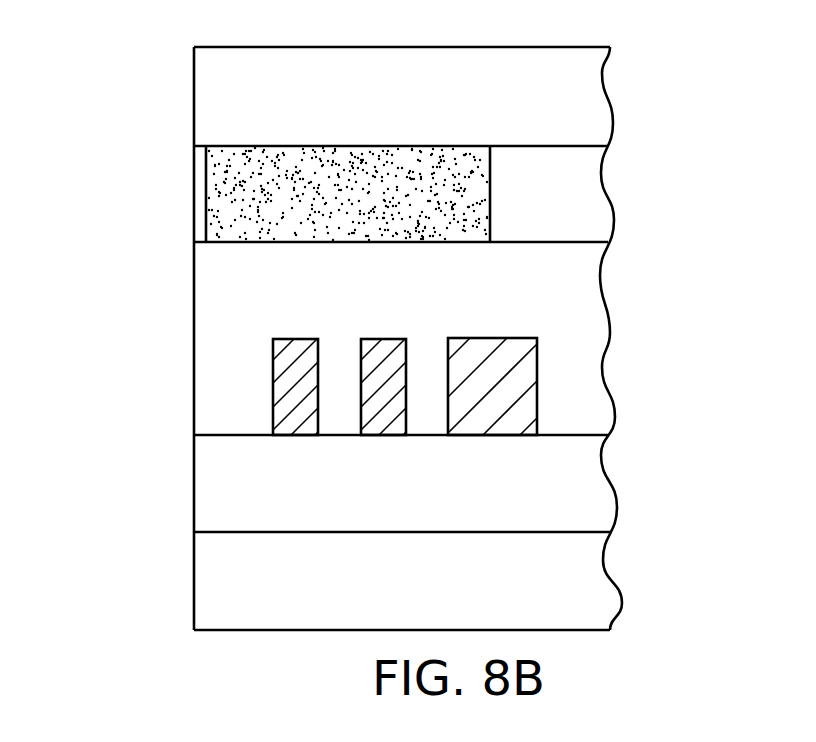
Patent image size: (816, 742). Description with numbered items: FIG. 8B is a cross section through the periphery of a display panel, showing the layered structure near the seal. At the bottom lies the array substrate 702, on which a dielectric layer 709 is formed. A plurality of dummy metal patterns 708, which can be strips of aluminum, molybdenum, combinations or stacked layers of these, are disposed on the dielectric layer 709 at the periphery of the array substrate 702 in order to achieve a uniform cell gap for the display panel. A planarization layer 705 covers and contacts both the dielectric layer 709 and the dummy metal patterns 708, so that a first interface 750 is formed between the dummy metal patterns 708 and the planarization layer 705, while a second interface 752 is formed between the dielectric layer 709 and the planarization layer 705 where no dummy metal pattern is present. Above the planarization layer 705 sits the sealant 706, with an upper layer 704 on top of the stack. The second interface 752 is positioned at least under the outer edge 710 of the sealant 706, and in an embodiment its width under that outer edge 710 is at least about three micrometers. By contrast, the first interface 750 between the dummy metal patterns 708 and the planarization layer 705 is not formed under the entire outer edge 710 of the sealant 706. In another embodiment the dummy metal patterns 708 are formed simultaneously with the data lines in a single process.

The array substrate 702 is at (585, 575).
The upper layer 704 is at (587, 97).
The planarization layer 705 is at (587, 312).
The sealant 706 is at (247, 198).
The dummy metal patterns 708 is at (510, 380).
The dielectric layer 709 is at (585, 485).
The outer edge of the sealant 710 is at (205, 162).
The first interface 750 is at (382, 338).
The second interface 752 is at (233, 435).